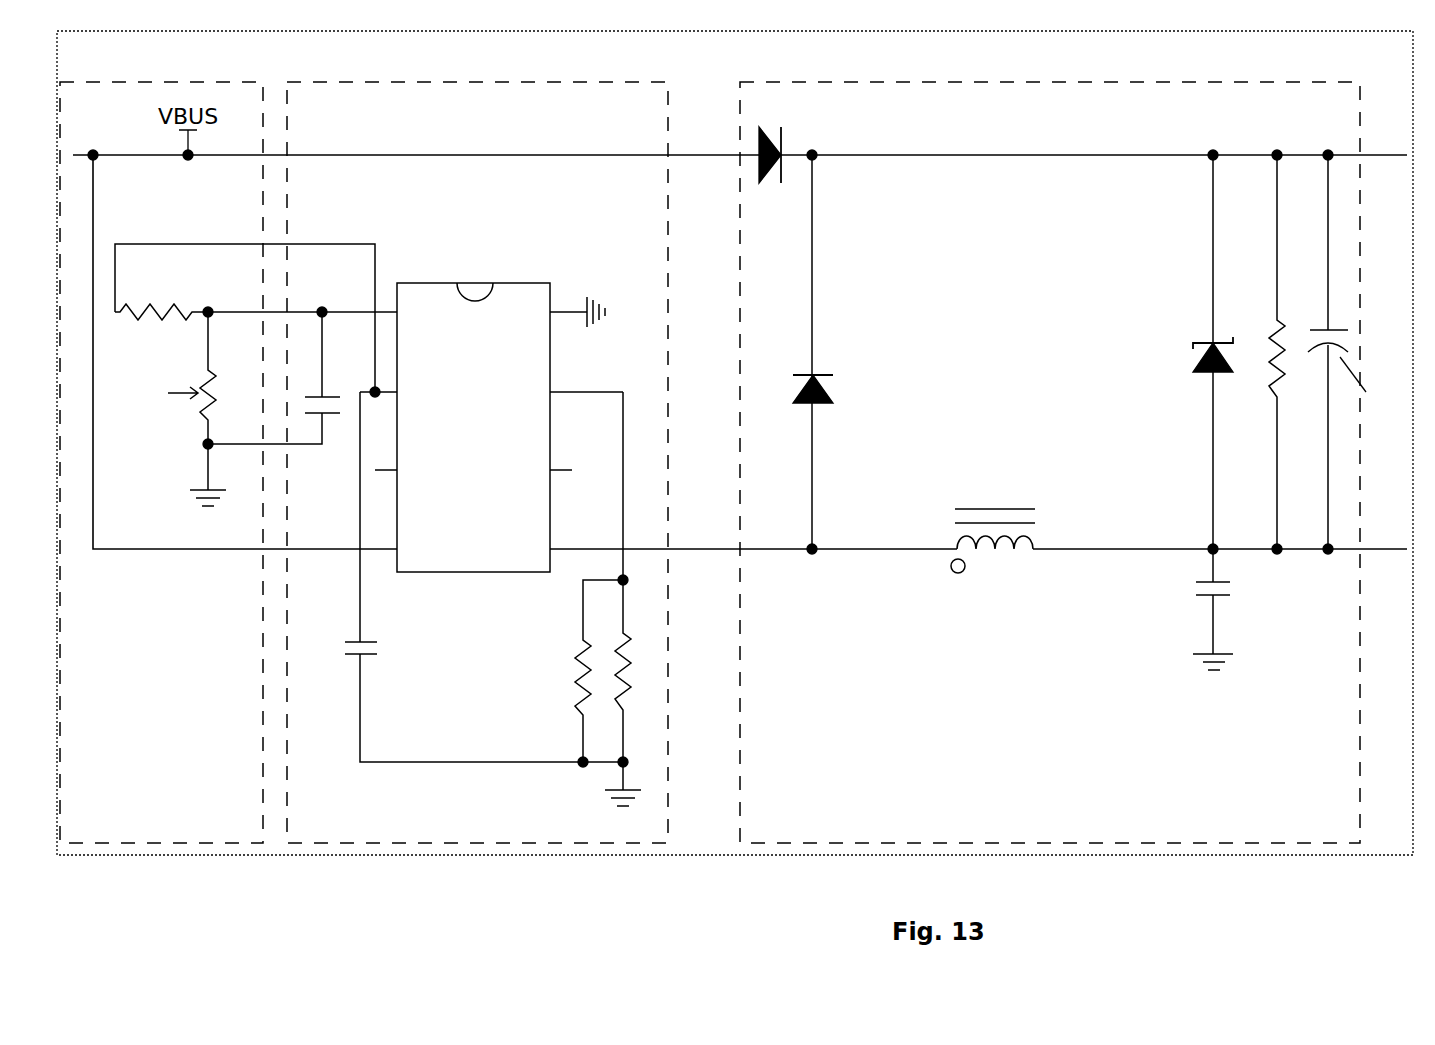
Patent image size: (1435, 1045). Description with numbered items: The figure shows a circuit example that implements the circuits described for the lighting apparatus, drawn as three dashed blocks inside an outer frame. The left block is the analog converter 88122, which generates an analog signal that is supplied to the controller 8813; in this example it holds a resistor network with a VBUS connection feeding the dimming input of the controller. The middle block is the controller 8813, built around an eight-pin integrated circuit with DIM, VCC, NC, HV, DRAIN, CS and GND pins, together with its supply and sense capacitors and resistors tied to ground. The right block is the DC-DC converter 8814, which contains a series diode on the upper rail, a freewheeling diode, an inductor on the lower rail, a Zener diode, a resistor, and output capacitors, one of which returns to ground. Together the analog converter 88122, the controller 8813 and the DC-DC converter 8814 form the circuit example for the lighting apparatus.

The analog converter 88122 is at (192, 82).
The controller 8813 is at (597, 82).
The DC-DC converter 8814 is at (1098, 82).